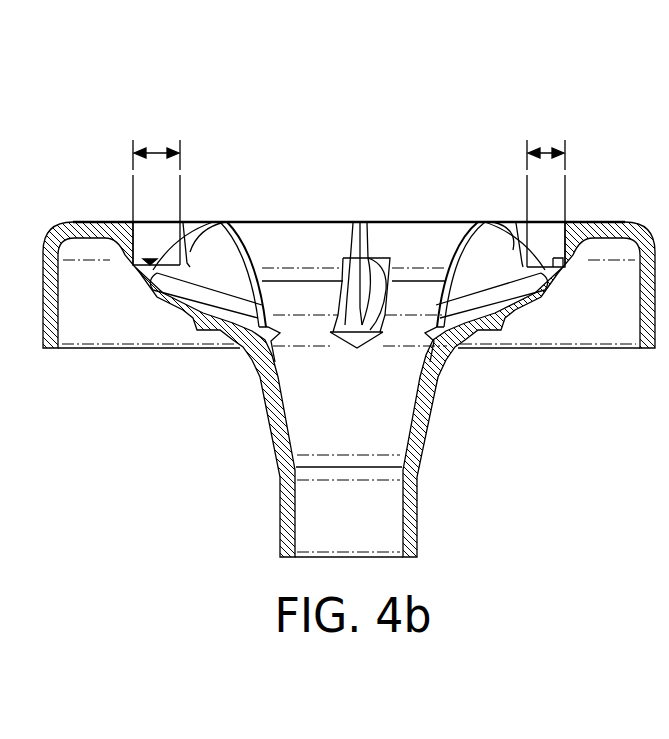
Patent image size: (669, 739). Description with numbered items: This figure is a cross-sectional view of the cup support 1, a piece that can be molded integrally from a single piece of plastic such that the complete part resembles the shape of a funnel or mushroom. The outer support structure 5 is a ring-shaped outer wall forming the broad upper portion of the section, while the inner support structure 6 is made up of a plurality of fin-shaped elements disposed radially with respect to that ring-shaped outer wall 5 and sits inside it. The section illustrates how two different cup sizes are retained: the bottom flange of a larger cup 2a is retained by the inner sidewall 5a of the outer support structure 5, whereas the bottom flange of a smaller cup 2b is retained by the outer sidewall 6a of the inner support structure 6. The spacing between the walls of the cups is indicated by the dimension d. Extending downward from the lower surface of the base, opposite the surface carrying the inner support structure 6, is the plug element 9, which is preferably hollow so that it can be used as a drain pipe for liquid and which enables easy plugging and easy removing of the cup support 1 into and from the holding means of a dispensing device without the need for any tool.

The cup support 1 is at (357, 169).
The larger cup 2a is at (133, 197).
The smaller cup 2b is at (180, 197).
The outer support structure 5 is at (593, 317).
The inner sidewall of the outer support structure 5a is at (128, 222).
The inner support structure 6 is at (222, 274).
The outer sidewall of the inner support structure 6a is at (225, 221).
The plug element 9 is at (380, 513).
The slot width d is at (155, 152).